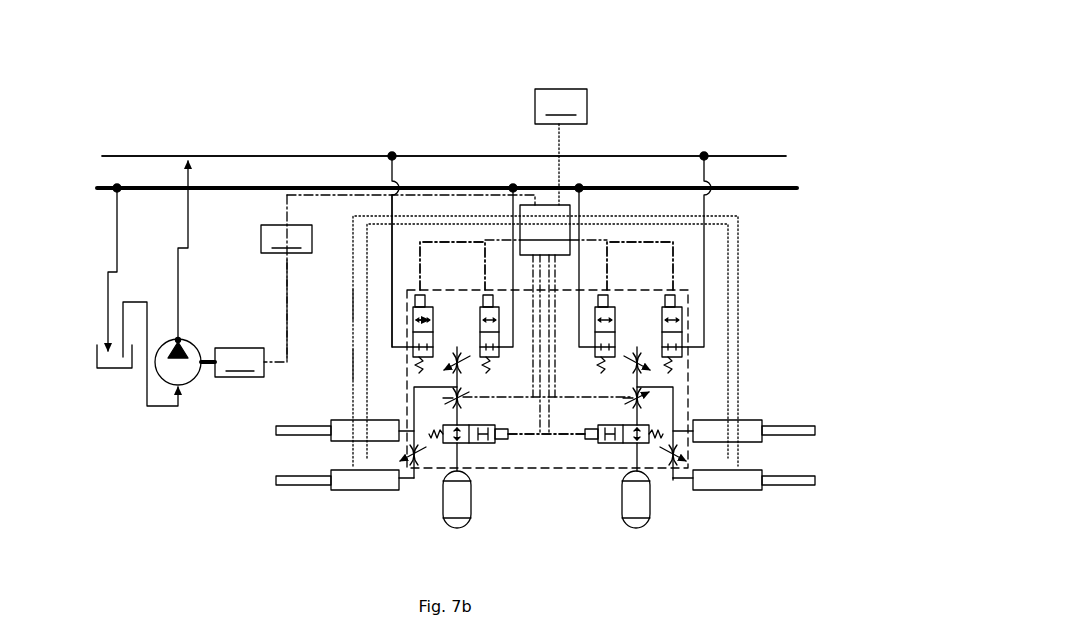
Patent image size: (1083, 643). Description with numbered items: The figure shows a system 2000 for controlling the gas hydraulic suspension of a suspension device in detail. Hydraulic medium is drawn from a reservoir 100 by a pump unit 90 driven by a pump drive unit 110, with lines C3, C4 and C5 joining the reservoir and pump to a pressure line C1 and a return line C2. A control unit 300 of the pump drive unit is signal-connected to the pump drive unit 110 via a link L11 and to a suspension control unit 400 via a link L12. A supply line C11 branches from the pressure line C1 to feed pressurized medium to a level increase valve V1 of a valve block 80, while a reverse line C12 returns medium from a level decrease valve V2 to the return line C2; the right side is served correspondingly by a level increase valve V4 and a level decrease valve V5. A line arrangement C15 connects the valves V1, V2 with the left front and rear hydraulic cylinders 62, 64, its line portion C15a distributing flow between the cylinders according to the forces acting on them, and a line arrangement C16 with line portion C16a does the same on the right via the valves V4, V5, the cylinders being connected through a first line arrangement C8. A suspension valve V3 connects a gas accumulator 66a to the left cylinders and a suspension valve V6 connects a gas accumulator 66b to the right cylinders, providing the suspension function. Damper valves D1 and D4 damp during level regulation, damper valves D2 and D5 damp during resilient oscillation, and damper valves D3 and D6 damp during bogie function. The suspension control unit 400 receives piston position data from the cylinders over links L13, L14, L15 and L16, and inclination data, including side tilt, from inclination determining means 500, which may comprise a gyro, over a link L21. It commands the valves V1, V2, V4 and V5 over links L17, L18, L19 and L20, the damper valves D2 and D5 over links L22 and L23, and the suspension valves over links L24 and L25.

The system for controlling gas hydraulic suspension 2000 is at (657, 70).
The inclination determining means 500 is at (561, 106).
The suspension control unit 400 is at (546, 230).
The control unit of the pump drive unit 300 is at (398, 278).
The pump drive unit 110 is at (232, 362).
The reservoir 100 is at (116, 373).
The pump unit 90 is at (193, 373).
The valve block 80 is at (694, 313).
The rear hydraulic cylinder 64 is at (329, 433).
The front hydraulic cylinder 62 is at (329, 484).
The gas accumulator for the left track assembly 66a is at (474, 500).
The gas accumulator for the right track assembly 66b is at (620, 500).
The pressure line C1 is at (325, 152).
The return line C2 is at (268, 184).
The line C3 is at (122, 299).
The line C4 is at (180, 287).
The line C5 is at (116, 246).
The first line arrangement C8 is at (674, 412).
The supply line C11 is at (582, 203).
The reverse line C12 is at (512, 202).
The line arrangement C15 is at (463, 397).
The line portion C15a is at (413, 480).
The line arrangement C16 is at (631, 397).
The line portion C16a is at (675, 481).
The damper valve D1 is at (448, 357).
The damper valve D2 is at (442, 398).
The damper valve D3 is at (417, 466).
The damper valve D4 is at (634, 357).
The damper valve D5 is at (626, 398).
The damper valve D6 is at (675, 466).
The level increase valve V1 is at (406, 354).
The level decrease valve V2 is at (502, 353).
The suspension valve V3 is at (475, 446).
The level increase valve V4 is at (687, 353).
The level decrease valve V5 is at (590, 352).
The suspension valve V6 is at (611, 446).
The link L11 is at (287, 322).
The link L12 is at (389, 180).
The link L13 is at (352, 363).
The link L14 is at (352, 299).
The link L15 is at (739, 268).
The link L16 is at (729, 347).
The link L17 is at (432, 268).
The link L18 is at (476, 268).
The link L19 is at (668, 268).
The link L20 is at (620, 268).
The link L21 is at (559, 131).
The link L22 is at (514, 399).
The link L23 is at (578, 399).
The link L24 is at (541, 436).
The link L25 is at (549, 436).